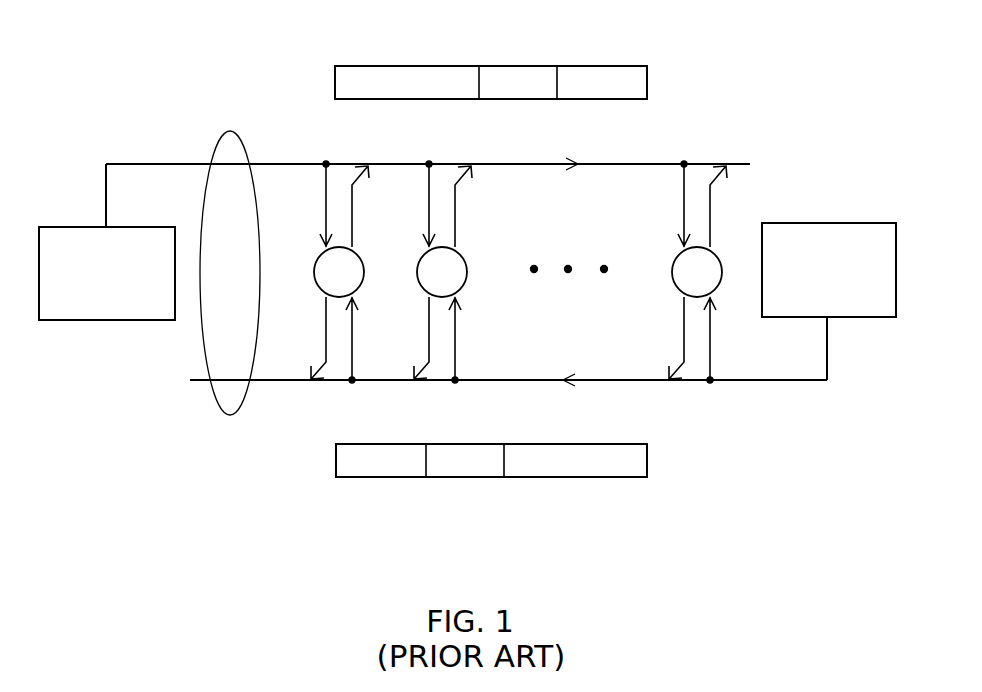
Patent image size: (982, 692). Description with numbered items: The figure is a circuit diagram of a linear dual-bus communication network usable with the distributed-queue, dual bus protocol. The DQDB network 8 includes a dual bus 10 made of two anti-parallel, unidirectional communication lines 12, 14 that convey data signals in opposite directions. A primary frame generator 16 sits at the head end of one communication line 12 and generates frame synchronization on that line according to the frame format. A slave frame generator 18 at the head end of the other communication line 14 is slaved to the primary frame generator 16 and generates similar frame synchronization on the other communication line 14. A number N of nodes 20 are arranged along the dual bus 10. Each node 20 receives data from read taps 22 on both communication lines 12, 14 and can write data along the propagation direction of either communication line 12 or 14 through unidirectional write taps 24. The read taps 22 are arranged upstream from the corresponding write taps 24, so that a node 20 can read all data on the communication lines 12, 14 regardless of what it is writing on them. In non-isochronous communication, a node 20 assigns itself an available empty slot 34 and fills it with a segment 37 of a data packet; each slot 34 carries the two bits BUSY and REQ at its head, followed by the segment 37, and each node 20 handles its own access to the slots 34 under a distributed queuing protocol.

The DQDB network 8 is at (711, 414).
The dual bus 10 is at (203, 197).
The communication line 12 is at (290, 164).
The communication line 14 is at (268, 386).
The primary frame generator 16 is at (105, 322).
The slave frame generator 18 is at (818, 222).
The node 20 is at (518, 272).
The read tap 22 is at (325, 178).
The write tap 24 is at (353, 186).
The slot 34 is at (647, 81).
The segment 37 is at (435, 67).